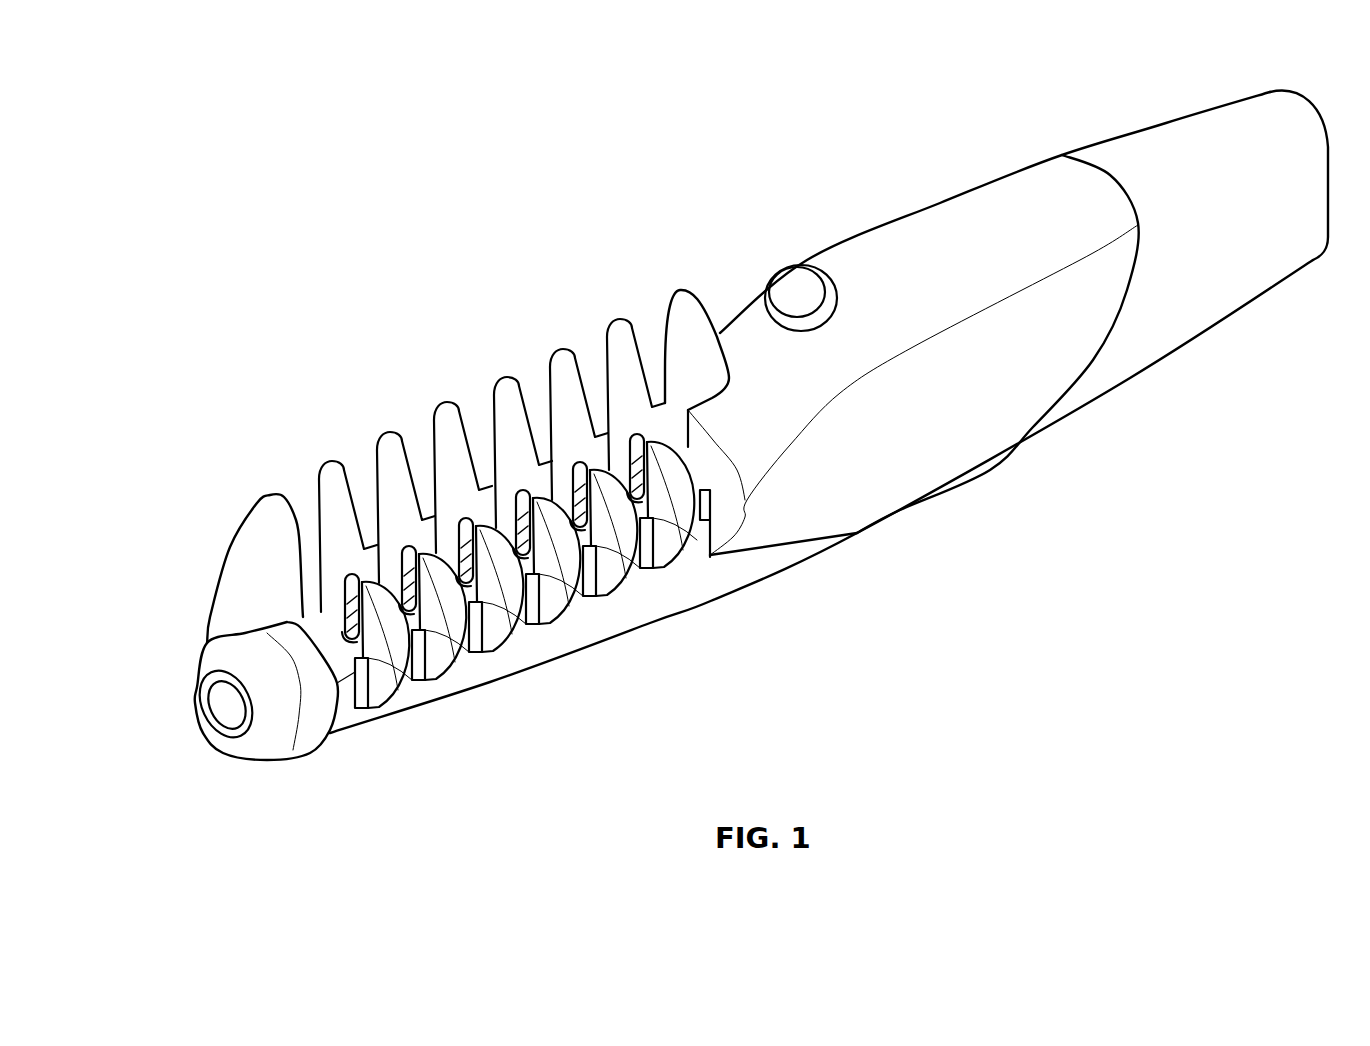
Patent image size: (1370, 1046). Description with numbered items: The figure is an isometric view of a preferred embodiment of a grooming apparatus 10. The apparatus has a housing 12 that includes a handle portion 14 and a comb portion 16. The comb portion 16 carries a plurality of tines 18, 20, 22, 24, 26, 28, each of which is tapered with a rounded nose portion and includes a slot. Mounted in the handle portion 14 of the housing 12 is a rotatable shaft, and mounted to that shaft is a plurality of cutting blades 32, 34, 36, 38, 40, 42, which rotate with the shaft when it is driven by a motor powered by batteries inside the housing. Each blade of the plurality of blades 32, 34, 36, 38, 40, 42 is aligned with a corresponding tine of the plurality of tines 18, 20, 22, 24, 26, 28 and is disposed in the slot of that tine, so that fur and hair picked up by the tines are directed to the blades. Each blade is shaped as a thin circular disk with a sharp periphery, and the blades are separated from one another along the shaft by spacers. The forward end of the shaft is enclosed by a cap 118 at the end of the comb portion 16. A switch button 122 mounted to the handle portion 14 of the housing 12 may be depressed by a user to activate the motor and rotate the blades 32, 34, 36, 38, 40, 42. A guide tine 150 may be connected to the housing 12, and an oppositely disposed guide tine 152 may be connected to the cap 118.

The grooming apparatus 10 is at (722, 142).
The housing 12 is at (918, 203).
The handle portion 14 is at (1022, 210).
The comb portion 16 is at (539, 650).
The tine 18 is at (620, 318).
The tine 20 is at (563, 348).
The tine 22 is at (507, 376).
The tine 24 is at (447, 401).
The tine 26 is at (390, 431).
The tine 28 is at (332, 460).
The cutting blade 32 is at (695, 547).
The cutting blade 34 is at (637, 563).
The cutting blade 36 is at (578, 567).
The cutting blade 38 is at (523, 607).
The cutting blade 40 is at (463, 680).
The cutting blade 42 is at (402, 708).
The cap 118 is at (260, 760).
The switch button 122 is at (793, 292).
The guide tine 150 is at (678, 289).
The guide tine 152 is at (272, 493).